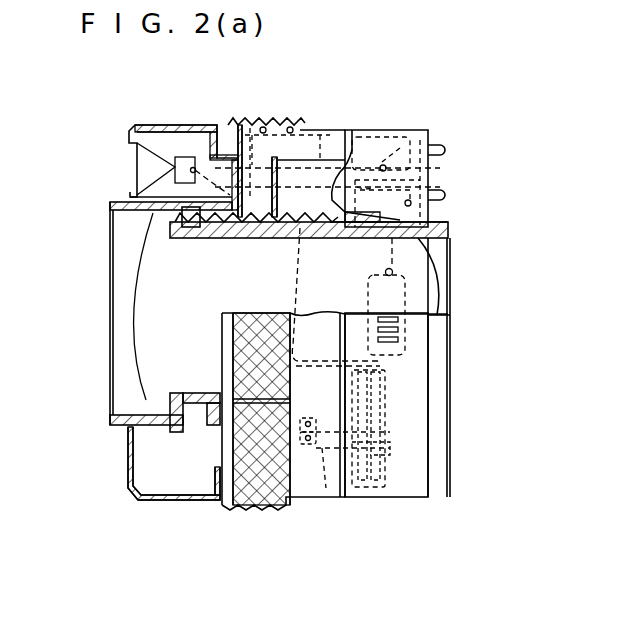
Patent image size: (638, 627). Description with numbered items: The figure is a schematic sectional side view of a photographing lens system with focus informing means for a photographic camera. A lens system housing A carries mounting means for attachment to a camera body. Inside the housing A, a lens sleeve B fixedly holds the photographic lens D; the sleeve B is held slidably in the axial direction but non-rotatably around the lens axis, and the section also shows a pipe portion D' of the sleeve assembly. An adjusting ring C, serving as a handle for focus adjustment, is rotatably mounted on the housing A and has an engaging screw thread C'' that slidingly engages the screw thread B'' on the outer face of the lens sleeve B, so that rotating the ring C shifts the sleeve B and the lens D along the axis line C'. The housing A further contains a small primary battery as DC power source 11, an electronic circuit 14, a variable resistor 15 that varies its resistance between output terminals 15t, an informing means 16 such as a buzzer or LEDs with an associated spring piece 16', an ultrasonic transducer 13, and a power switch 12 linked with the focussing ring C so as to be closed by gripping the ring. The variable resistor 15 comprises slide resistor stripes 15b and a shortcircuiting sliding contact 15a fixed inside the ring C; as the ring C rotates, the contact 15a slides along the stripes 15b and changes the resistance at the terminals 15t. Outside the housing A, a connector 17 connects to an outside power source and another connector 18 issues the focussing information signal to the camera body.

The DC power source 11 is at (378, 140).
The power switch 12 is at (262, 130).
The ultrasonic transducer 13 is at (183, 157).
The electronic circuit 14 is at (420, 135).
The variable resistor 15 is at (386, 448).
The shortcircuiting sliding contact 15a is at (325, 490).
The slide resistor stripes 15b is at (375, 408).
The output terminals 15t is at (400, 368).
The informing means 16 is at (441, 269).
The connector spring piece 16' is at (429, 315).
The connector 17 is at (440, 148).
The connector 18 is at (440, 195).
The lens system housing A is at (340, 178).
The lens sleeve B is at (146, 187).
The screw thread B'' is at (251, 249).
The adjusting ring C is at (177, 480).
The axis line C' is at (327, 137).
The engaging screw thread C'' is at (262, 129).
The photographic lens D is at (141, 317).
The inner pipe D' is at (232, 152).